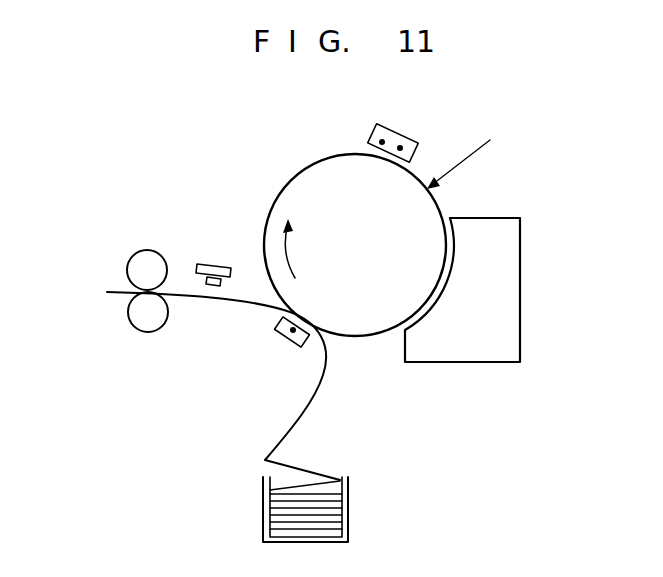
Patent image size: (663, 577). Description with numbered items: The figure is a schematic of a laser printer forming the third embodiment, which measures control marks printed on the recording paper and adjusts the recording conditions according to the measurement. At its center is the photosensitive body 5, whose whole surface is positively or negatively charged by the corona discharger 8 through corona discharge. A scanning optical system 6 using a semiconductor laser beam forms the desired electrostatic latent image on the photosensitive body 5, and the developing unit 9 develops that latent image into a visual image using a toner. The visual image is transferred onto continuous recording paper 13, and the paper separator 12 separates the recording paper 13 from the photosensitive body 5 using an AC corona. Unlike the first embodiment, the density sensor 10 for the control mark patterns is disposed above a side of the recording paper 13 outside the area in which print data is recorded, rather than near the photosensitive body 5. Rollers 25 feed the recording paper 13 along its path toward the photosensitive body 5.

The photosensitive body 5 is at (283, 187).
The scanning optical system 6 is at (477, 152).
The corona discharger 8 is at (410, 136).
The developing unit 9 is at (520, 290).
The density sensor 10 is at (210, 262).
The paper separator 12 is at (285, 338).
The recording paper 13 is at (307, 403).
The feed rollers 25 is at (127, 265).